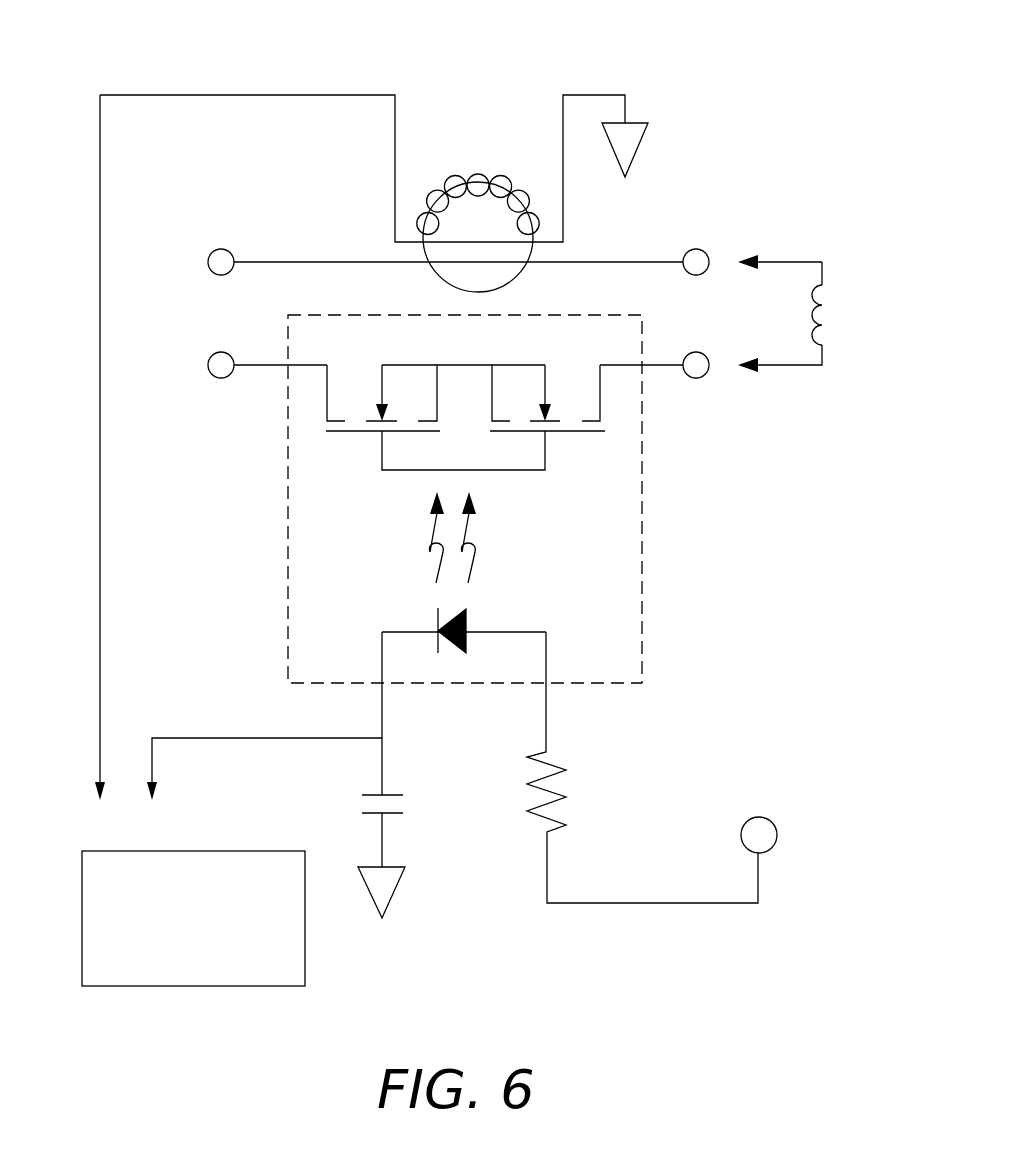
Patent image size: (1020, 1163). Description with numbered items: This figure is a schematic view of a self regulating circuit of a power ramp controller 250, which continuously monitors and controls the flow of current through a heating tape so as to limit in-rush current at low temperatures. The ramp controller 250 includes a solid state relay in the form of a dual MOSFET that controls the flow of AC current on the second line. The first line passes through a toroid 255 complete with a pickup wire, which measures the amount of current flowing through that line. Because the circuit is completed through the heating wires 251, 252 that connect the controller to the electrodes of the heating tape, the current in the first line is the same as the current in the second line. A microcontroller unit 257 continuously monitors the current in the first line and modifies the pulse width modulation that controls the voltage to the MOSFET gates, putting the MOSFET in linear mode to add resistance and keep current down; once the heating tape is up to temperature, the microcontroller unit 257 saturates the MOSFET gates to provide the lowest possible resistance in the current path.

The ramp controller 250 is at (745, 31).
The wire 251 is at (841, 313).
The wire 252 is at (841, 313).
The toroid 255 is at (478, 172).
The microcontroller unit 257 is at (128, 986).